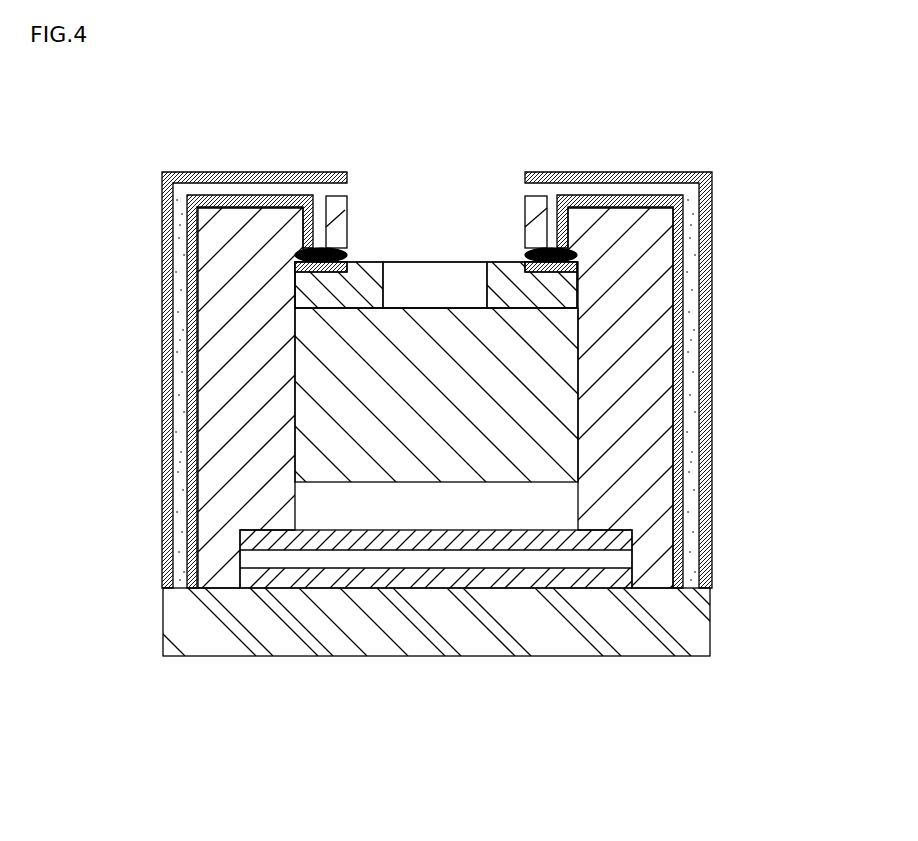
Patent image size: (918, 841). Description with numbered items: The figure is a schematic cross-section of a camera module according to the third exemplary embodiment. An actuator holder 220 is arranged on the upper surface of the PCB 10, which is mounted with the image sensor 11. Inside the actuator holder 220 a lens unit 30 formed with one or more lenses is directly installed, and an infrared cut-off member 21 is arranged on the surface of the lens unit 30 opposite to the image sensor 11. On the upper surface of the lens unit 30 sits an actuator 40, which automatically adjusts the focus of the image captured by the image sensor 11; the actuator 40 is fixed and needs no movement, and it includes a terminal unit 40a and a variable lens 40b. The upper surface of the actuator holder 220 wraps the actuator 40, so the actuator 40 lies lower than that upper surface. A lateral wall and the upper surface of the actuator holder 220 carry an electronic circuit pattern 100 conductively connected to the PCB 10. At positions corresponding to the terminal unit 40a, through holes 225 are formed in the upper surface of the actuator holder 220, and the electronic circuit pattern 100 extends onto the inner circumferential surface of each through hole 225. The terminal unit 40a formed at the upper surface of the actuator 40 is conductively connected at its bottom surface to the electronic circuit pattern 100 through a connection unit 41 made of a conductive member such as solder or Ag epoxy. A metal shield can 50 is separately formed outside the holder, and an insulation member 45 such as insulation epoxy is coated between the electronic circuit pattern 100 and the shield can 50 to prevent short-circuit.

The PCB 10 is at (400, 640).
The image sensor 11 is at (530, 582).
The infrared cut-off member 21 is at (502, 571).
The lens unit 30 is at (535, 350).
The actuator 40 is at (440, 208).
The terminal unit 40a is at (350, 267).
The variable lens 40b is at (440, 275).
The connection unit 41 is at (296, 255).
The insulation member 45 is at (178, 287).
The shield can 50 is at (640, 170).
The electronic circuit pattern 100 is at (197, 463).
The actuator holder 220 is at (212, 537).
The through hole 225 is at (566, 252).